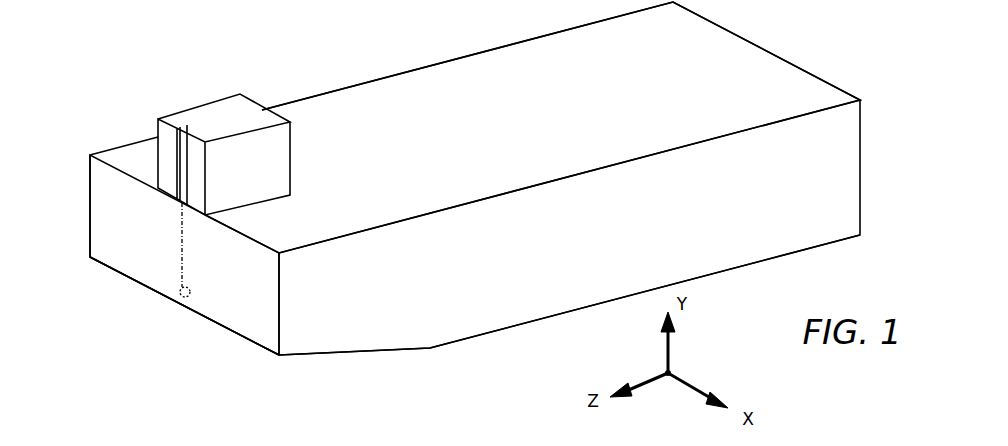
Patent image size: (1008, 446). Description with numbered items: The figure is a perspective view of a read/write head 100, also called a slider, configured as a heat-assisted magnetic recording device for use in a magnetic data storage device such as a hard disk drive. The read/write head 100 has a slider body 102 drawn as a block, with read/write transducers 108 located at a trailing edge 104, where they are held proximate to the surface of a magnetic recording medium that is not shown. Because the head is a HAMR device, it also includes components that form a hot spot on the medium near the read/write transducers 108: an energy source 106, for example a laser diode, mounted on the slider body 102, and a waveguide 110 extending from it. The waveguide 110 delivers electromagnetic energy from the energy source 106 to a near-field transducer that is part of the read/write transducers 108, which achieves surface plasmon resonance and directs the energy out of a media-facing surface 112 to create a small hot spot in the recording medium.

The read/write head 100 is at (826, 39).
The slider body 102 is at (417, 77).
The trailing edge 104 is at (93, 232).
The energy source 106 is at (184, 113).
The read/write transducers 108 is at (178, 312).
The waveguide 110 is at (182, 247).
The media-facing surface 112 is at (265, 350).